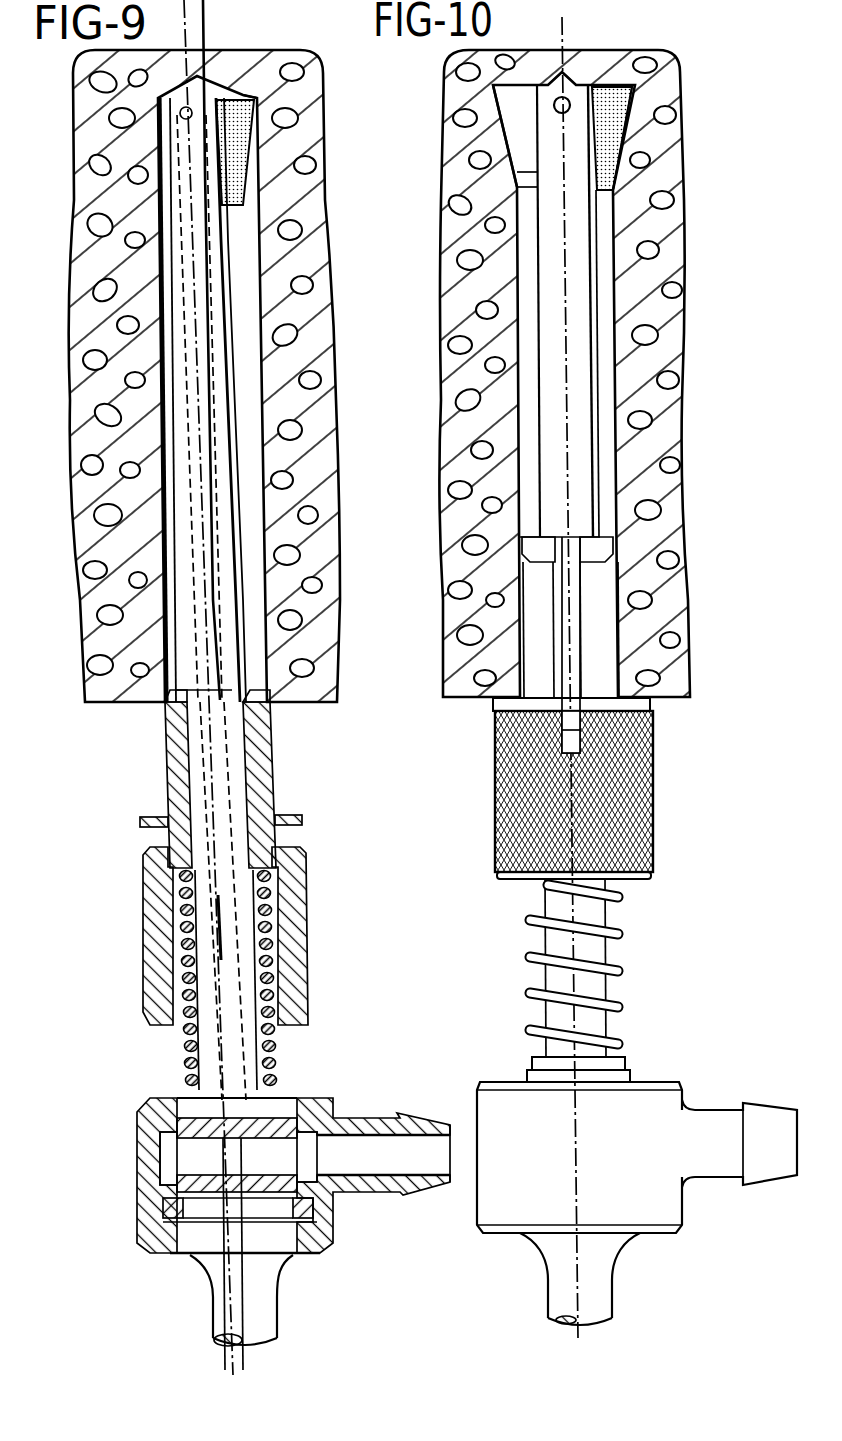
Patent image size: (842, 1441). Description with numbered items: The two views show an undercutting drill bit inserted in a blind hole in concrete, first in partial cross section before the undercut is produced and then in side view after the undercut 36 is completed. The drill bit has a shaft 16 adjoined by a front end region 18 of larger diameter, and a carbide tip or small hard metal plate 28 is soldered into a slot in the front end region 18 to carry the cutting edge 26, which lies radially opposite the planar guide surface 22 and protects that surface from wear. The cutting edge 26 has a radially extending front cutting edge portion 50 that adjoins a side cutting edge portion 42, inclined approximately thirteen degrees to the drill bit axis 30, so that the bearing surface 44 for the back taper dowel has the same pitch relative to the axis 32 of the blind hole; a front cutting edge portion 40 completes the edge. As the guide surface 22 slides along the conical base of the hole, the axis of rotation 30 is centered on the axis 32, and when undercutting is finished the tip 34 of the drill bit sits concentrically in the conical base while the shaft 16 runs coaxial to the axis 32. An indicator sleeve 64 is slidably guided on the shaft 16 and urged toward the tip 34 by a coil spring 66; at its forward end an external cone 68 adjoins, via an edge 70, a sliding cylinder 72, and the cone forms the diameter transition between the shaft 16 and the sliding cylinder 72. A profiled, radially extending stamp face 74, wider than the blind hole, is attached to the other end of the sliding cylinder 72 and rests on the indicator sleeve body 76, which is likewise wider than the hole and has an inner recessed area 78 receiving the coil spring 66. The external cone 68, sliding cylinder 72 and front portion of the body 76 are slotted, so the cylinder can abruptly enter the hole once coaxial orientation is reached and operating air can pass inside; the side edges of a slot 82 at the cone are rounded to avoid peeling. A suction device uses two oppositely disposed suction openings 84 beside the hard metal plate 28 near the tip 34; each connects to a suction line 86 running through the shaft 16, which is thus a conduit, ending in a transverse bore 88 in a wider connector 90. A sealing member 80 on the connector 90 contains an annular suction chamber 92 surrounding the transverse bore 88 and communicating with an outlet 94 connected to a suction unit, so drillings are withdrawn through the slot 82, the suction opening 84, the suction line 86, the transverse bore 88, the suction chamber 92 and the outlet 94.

In FIG. 10, the shaft 16 is at (594, 450).
In FIG. 9, the front end region 18 is at (163, 175).
In FIG. 10, the front end region 18 is at (520, 170).
In FIG. 9, the guide surface 22 is at (206, 687).
In FIG. 9, the cutting edge 26 is at (260, 154).
In FIG. 10, the cutting edge 26 is at (636, 136).
In FIG. 9, the hard metal plate 28 is at (232, 124).
In FIG. 10, the hard metal plate 28 is at (617, 160).
In FIG. 10, the axis of rotation 30 is at (570, 390).
In FIG. 10, the axis of the blind hole 32 is at (563, 32).
In FIG. 10, the tip of the drill bit 34 is at (560, 71).
In FIG. 10, the undercut 36 is at (502, 120).
In FIG. 10, the front cutting edge portion 40 is at (628, 82).
In FIG. 10, the side cutting edge portion 42 is at (636, 132).
In FIG. 10, the bearing surface 44 is at (514, 188).
In FIG. 9, the radially extending front cutting edge portion 50 is at (258, 51).
In FIG. 9, the indicator sleeve 64 is at (310, 982).
In FIG. 10, the indicator sleeve 64 is at (657, 778).
In FIG. 9, the coil spring 66 is at (278, 1052).
In FIG. 10, the coil spring 66 is at (620, 963).
In FIG. 9, the external cone 68 is at (192, 690).
In FIG. 10, the external cone 68 is at (523, 547).
In FIG. 9, the edge 70 is at (168, 699).
In FIG. 10, the edge 70 is at (624, 575).
In FIG. 9, the sliding cylinder 72 is at (272, 750).
In FIG. 10, the sliding cylinder 72 is at (530, 657).
In FIG. 9, the stamp face 74 is at (158, 817).
In FIG. 9, the indicator sleeve body 76 is at (302, 885).
In FIG. 10, the indicator sleeve body 76 is at (655, 819).
In FIG. 9, the recessed area 78 is at (274, 938).
In FIG. 9, the sealing member 80 is at (145, 1197).
In FIG. 10, the sealing member 80 is at (668, 1200).
In FIG. 10, the slot 82 is at (580, 637).
In FIG. 9, the suction opening 84 is at (179, 114).
In FIG. 9, the suction line 86 is at (182, 313).
In FIG. 9, the transverse bore 88 is at (197, 1112).
In FIG. 9, the connector 90 is at (192, 1239).
In FIG. 9, the annular suction chamber 92 is at (163, 1150).
In FIG. 9, the outlet 94 is at (404, 1115).